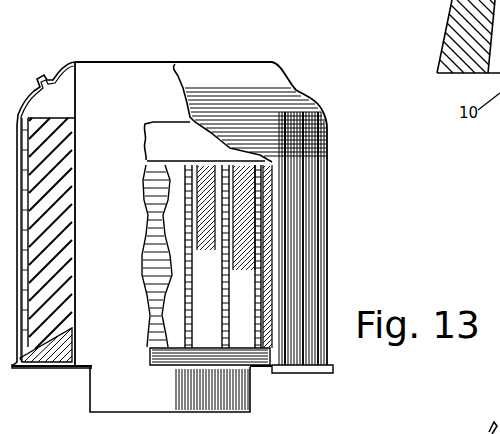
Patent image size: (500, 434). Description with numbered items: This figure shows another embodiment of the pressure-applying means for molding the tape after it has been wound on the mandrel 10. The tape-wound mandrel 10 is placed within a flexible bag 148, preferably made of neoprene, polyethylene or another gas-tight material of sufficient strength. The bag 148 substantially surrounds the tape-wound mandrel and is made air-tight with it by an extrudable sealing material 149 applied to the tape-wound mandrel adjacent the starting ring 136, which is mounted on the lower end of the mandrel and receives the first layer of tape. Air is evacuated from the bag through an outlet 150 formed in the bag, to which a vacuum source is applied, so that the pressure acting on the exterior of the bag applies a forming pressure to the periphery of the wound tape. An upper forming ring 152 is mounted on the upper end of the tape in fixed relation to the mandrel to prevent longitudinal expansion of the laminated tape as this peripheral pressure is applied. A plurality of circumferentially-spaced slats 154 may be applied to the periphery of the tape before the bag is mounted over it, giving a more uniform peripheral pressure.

The mandrel 10 is at (97, 58).
The outlet 150 is at (50, 76).
The upper forming ring 152 is at (74, 116).
The flexible bag 148 is at (292, 100).
The circumferentially-spaced slats 154 is at (206, 220).
The starting ring 136 is at (69, 342).
The extrudable sealing material 149 is at (25, 364).